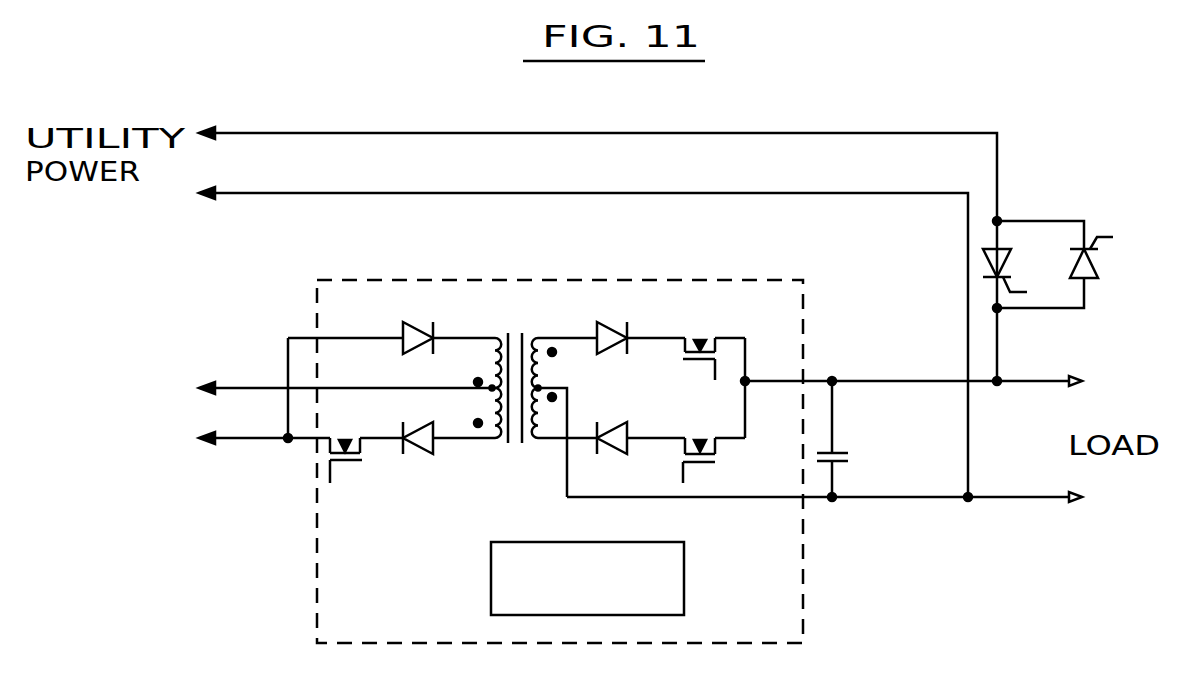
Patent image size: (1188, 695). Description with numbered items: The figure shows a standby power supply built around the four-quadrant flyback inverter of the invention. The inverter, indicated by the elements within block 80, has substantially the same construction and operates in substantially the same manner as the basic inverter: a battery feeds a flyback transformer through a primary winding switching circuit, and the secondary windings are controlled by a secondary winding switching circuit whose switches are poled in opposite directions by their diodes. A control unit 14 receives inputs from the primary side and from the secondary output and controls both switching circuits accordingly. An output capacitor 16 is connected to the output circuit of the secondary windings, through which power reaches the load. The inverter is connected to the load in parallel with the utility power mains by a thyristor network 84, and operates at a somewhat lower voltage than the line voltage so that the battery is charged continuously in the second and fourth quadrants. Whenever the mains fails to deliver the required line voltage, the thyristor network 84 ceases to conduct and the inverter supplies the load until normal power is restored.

The control unit 14 is at (670, 557).
The output capacitor 16 is at (845, 440).
The inverter block 80 is at (774, 295).
The thyristor network 84 is at (1010, 235).